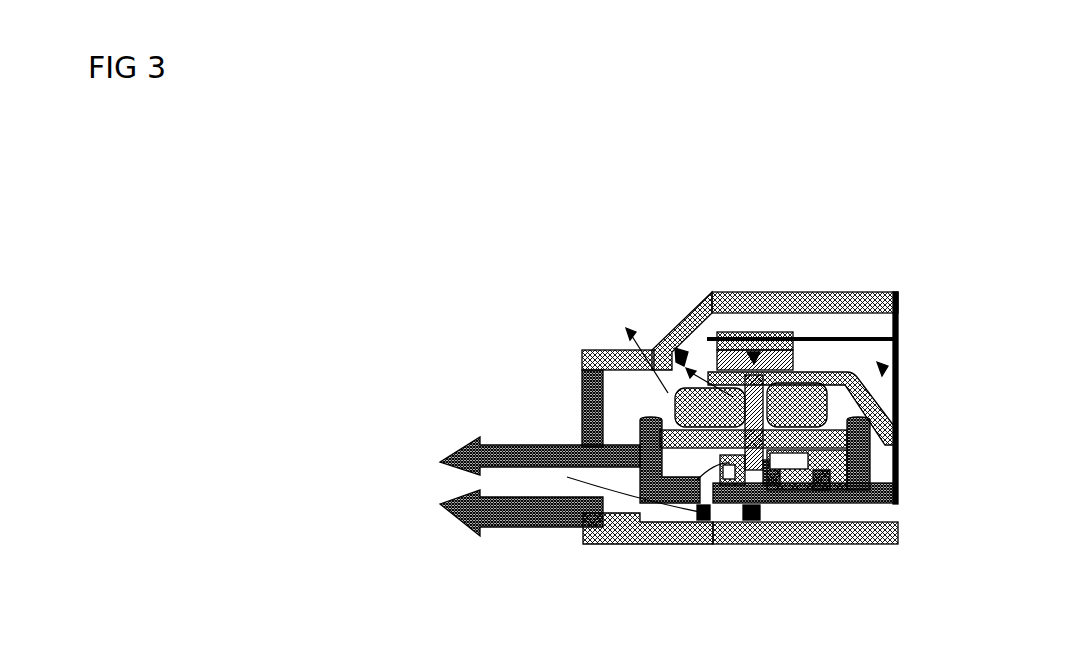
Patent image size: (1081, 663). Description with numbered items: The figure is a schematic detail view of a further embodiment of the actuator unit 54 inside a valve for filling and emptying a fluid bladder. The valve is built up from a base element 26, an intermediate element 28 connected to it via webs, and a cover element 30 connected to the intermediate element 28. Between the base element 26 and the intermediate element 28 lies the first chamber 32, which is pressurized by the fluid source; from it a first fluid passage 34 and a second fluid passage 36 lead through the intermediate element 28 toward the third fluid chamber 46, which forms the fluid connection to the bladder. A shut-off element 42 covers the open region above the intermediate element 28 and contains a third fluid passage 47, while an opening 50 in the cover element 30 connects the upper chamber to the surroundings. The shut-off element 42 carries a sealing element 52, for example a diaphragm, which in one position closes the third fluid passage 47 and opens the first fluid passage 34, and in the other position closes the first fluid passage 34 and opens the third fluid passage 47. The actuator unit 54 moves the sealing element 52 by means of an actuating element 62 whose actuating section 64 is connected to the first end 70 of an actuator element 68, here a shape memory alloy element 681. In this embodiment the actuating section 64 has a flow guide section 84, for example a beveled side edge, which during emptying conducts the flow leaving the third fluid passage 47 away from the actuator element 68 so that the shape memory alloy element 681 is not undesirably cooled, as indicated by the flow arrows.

The base element 26 is at (612, 545).
The intermediate element 28 is at (508, 528).
The cover element 30 is at (858, 292).
The first chamber 32 is at (882, 545).
The first fluid passage 34 is at (752, 520).
The second fluid passage 36 is at (703, 520).
The shut-off element 42 is at (680, 350).
The third fluid chamber 46 is at (462, 492).
The third fluid passage 47 is at (870, 441).
The opening 50 is at (633, 363).
The sealing element 52 is at (870, 476).
The actuator unit 54 is at (880, 375).
The actuating element 62 is at (880, 430).
The actuating section 64 is at (742, 330).
The actuator element 68 is at (872, 340).
The shape memory alloy element 681 is at (873, 318).
The first end 70 is at (756, 350).
The flow guide section 84 is at (713, 352).